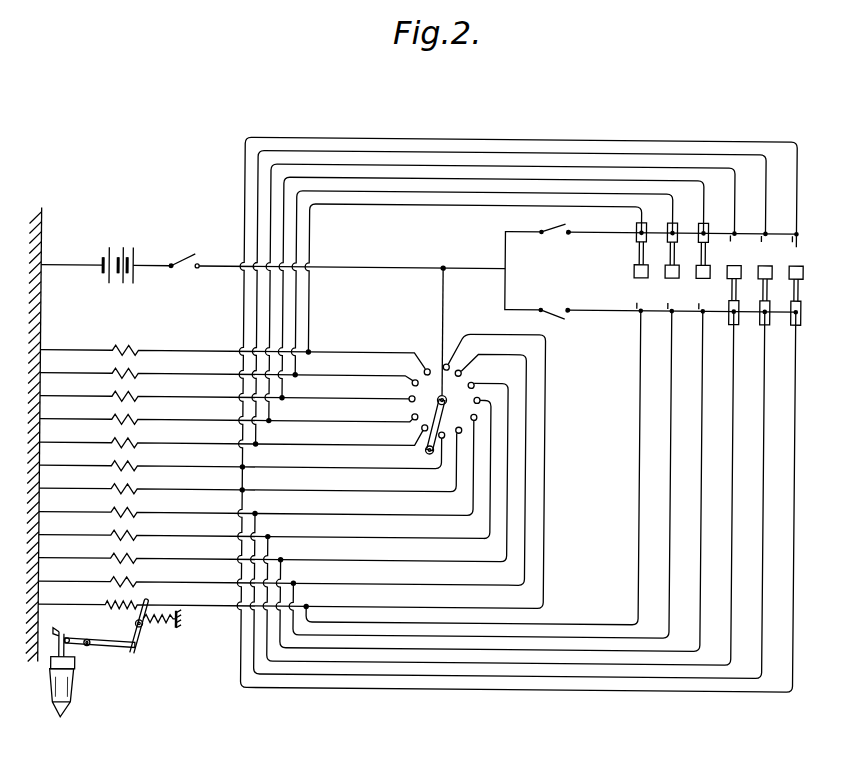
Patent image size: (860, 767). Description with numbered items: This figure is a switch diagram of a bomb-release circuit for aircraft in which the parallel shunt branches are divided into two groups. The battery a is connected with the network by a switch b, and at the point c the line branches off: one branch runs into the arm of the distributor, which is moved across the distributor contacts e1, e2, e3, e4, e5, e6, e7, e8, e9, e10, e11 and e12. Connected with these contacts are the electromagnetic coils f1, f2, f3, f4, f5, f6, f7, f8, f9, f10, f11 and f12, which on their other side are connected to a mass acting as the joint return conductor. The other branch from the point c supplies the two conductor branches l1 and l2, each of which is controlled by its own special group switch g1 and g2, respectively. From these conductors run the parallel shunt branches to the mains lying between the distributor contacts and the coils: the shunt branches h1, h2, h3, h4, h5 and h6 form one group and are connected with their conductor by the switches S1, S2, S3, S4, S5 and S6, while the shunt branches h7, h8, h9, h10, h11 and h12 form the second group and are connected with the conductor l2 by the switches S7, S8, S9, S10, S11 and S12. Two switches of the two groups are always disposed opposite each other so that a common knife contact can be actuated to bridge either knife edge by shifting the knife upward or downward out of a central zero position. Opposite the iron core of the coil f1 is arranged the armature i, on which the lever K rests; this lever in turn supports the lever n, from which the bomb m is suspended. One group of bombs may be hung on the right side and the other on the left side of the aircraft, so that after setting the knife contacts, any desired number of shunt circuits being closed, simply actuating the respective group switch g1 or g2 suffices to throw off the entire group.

The battery a is at (124, 251).
The switch b is at (200, 264).
The branch point c is at (503, 268).
The group switch g1 is at (566, 225).
The group switch g2 is at (566, 319).
The conductor branch l1 is at (596, 234).
The conductor branch l2 is at (579, 308).
The switch S1 is at (630, 305).
The switch S2 is at (661, 305).
The switch S3 is at (692, 305).
The switch S4 is at (726, 294).
The switch S5 is at (757, 295).
The switch S6 is at (788, 295).
The switch S7 is at (786, 245).
The switch S8 is at (755, 244).
The switch S9 is at (724, 244).
The switch S10 is at (695, 250).
The switch S11 is at (664, 250).
The switch S12 is at (632, 250).
The shunt branch h1 is at (452, 623).
The shunt branch h2 is at (452, 636).
The shunt branch h3 is at (452, 649).
The shunt branch h4 is at (452, 662).
The shunt branch h5 is at (452, 676).
The shunt branch h6 is at (452, 689).
The shunt branch h7 is at (399, 139).
The shunt branch h8 is at (399, 152).
The shunt branch h9 is at (399, 166).
The shunt branch h10 is at (399, 178).
The shunt branch h11 is at (399, 192).
The shunt branch h12 is at (399, 205).
The electromagnetic coil f1 is at (112, 604).
The electromagnetic coil f2 is at (112, 582).
The electromagnetic coil f3 is at (112, 558).
The electromagnetic coil f4 is at (112, 535).
The electromagnetic coil f5 is at (112, 512).
The electromagnetic coil f6 is at (112, 488).
The electromagnetic coil f7 is at (112, 466).
The electromagnetic coil f8 is at (112, 442).
The electromagnetic coil f9 is at (112, 419).
The electromagnetic coil f10 is at (112, 396).
The electromagnetic coil f11 is at (112, 373).
The electromagnetic coil f12 is at (112, 350).
The distributor contact e1 is at (419, 471).
The distributor contact e2 is at (395, 464).
The distributor contact e3 is at (380, 463).
The distributor contact e4 is at (373, 459).
The distributor contact e5 is at (358, 456).
The distributor contact e6 is at (350, 449).
The distributor contact e7 is at (434, 436).
The distributor contact e8 is at (342, 434).
The distributor contact e9 is at (343, 413).
The distributor contact e10 is at (348, 391).
The distributor contact e11 is at (356, 372).
The distributor contact e12 is at (373, 362).
The armature i is at (144, 630).
The lever K is at (98, 650).
The lever n is at (66, 638).
The bomb m is at (68, 701).